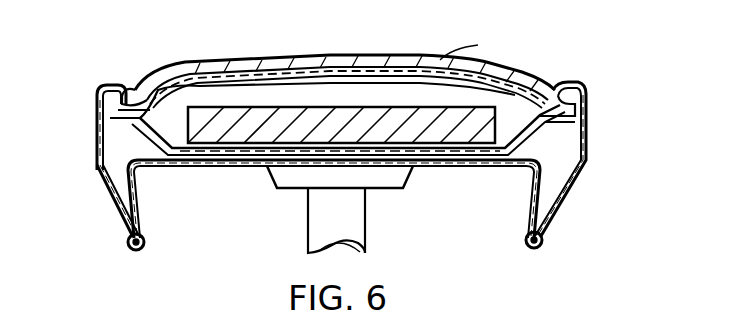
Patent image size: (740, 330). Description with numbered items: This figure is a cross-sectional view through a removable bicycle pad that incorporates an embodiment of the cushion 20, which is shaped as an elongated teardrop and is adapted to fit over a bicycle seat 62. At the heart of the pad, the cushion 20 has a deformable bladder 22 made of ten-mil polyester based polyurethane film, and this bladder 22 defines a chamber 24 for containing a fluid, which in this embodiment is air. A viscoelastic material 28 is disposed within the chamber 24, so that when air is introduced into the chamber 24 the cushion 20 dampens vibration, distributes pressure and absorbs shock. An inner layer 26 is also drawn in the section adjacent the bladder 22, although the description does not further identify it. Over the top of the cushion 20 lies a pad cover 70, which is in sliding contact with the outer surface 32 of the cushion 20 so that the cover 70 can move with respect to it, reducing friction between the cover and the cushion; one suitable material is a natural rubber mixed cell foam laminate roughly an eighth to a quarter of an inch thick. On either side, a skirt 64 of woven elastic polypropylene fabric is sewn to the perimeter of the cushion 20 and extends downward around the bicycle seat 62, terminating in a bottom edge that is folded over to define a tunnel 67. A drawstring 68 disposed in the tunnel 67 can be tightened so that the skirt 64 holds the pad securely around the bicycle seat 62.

The cushion 20 is at (215, 82).
The deformable bladder 22 is at (120, 150).
The chamber 24 is at (144, 92).
The inner liner 26 is at (183, 95).
The viscoelastic material 28 is at (265, 162).
The outer surface 32 is at (290, 56).
The bicycle seat 62 is at (446, 170).
The skirt 64 is at (588, 168).
The tunnel 67 is at (543, 238).
The drawstring 68 is at (146, 244).
The pad cover 70 is at (478, 45).